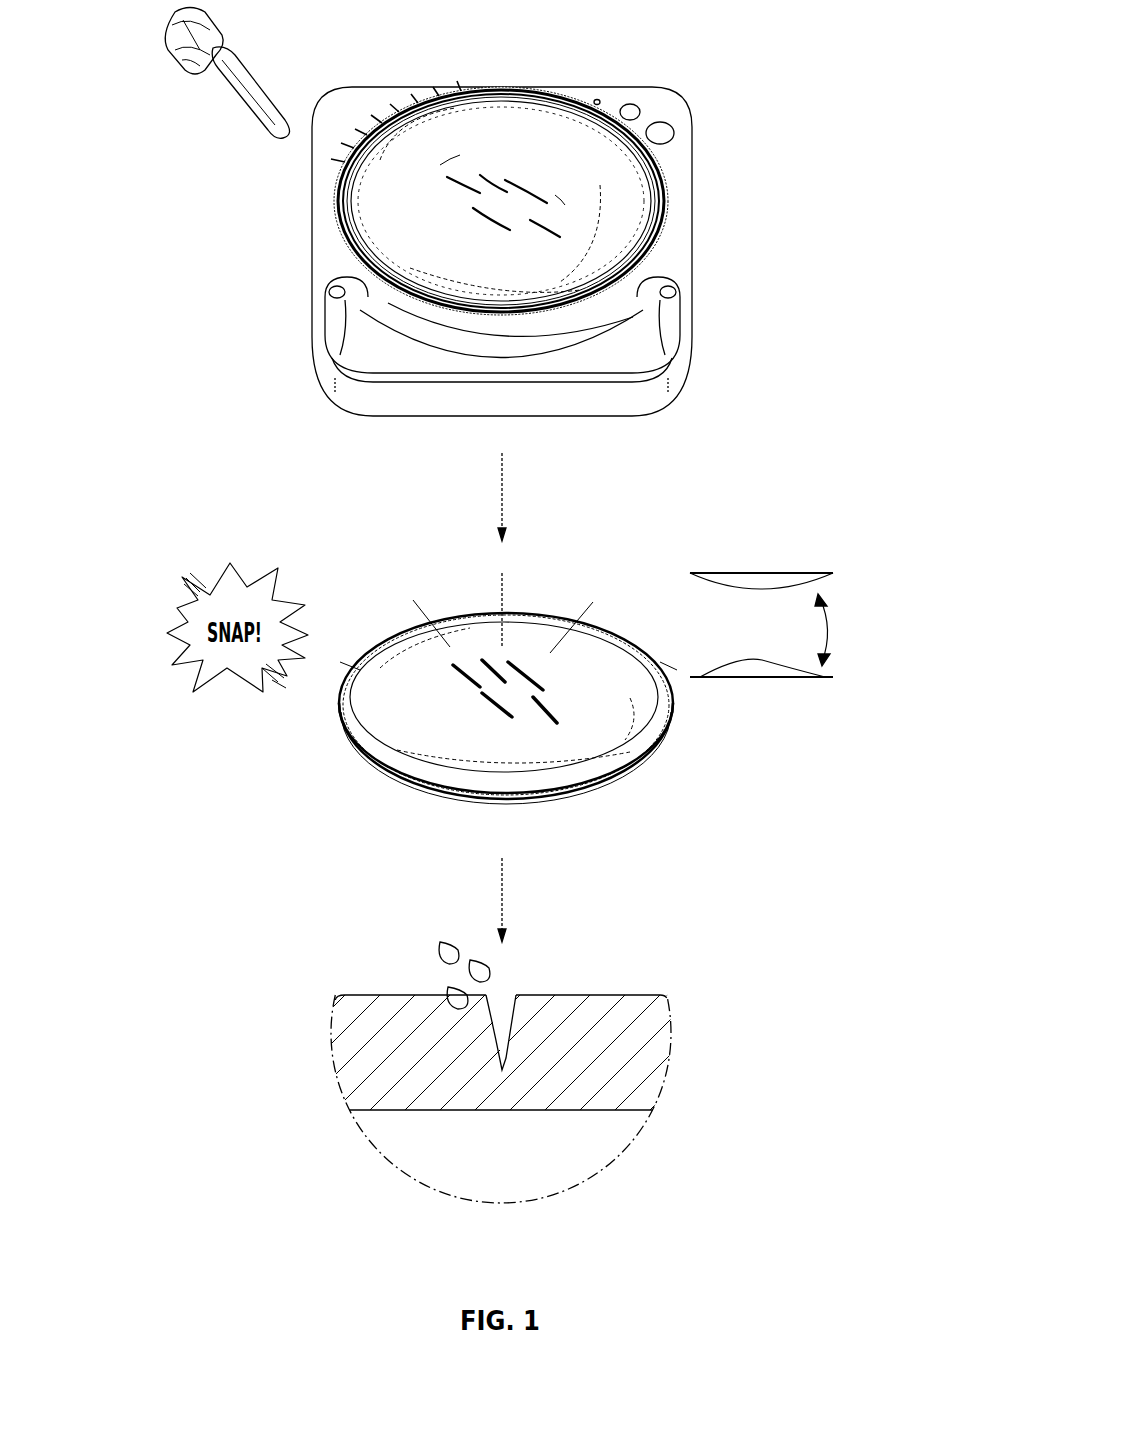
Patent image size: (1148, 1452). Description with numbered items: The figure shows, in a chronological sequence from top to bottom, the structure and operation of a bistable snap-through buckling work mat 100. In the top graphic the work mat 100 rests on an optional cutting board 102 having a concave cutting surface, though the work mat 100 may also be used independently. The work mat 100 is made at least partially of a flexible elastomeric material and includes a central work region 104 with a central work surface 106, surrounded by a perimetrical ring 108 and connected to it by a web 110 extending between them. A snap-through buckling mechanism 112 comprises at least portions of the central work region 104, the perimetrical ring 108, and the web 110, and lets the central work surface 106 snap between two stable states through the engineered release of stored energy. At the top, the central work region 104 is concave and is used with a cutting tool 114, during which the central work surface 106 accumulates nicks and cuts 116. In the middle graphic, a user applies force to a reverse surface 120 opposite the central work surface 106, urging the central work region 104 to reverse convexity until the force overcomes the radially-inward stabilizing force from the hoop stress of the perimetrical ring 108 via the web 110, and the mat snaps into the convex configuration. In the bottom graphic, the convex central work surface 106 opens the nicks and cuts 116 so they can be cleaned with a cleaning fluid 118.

The work mat 100 is at (510, 74).
The cutting board 102 is at (322, 190).
The central work region 104 is at (380, 247).
The central work surface 106 is at (605, 223).
The perimetrical ring 108 is at (647, 257).
The web 110 is at (618, 293).
The snap-through buckling mechanism 112 is at (670, 199).
The cutting tool 114 is at (222, 42).
The nicks and cuts 116 is at (550, 236).
The cleaning fluid 118 is at (438, 943).
The reverse surface 120 is at (400, 1112).